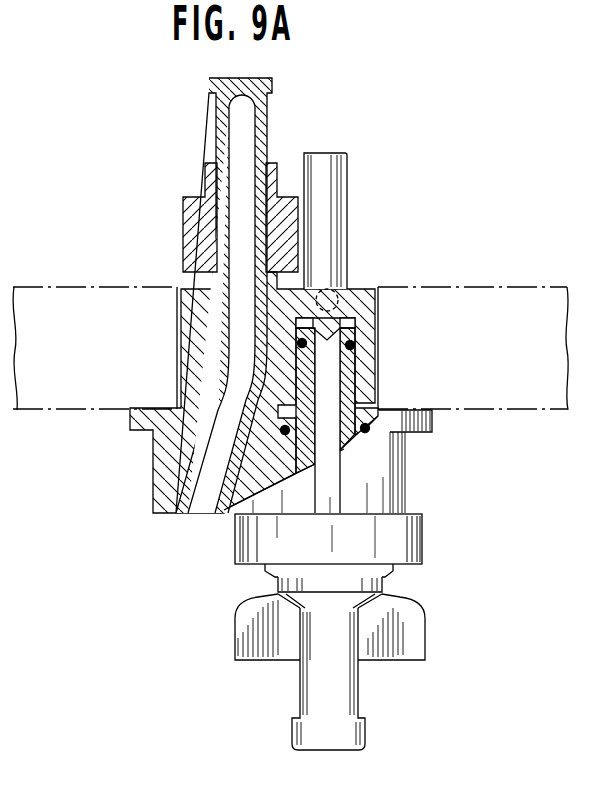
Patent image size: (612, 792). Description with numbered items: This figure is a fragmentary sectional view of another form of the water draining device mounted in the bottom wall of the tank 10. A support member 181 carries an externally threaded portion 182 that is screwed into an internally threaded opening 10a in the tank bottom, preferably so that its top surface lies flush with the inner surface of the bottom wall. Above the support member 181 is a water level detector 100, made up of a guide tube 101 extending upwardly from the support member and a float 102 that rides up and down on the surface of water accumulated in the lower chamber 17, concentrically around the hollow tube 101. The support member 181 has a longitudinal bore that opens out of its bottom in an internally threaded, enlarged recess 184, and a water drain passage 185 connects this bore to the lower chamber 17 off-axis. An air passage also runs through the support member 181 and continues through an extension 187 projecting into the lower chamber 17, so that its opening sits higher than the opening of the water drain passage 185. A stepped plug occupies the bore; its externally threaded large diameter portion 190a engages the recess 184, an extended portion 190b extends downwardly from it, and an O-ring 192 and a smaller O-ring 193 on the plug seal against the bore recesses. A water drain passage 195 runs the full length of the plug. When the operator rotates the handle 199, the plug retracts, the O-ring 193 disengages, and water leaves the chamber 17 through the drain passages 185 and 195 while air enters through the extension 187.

The tank 10 is at (488, 410).
The internally threaded opening 10a is at (182, 312).
The lower chamber 17 is at (498, 232).
The water level detector 100 is at (281, 150).
The guide tube 101 is at (216, 126).
The float 102 is at (192, 220).
The support member 181 is at (173, 457).
The externally threaded portion 182 is at (181, 364).
The internally threaded enlarged recess 184 is at (281, 461).
The water drain passage 185 is at (338, 296).
The extension 187 is at (338, 185).
The large diameter portion 190a is at (368, 440).
The extended portion 190b is at (345, 692).
The O-ring 192 is at (355, 344).
The O-ring 193 is at (372, 430).
The water drain passage 195 is at (334, 437).
The handle 199 is at (408, 620).